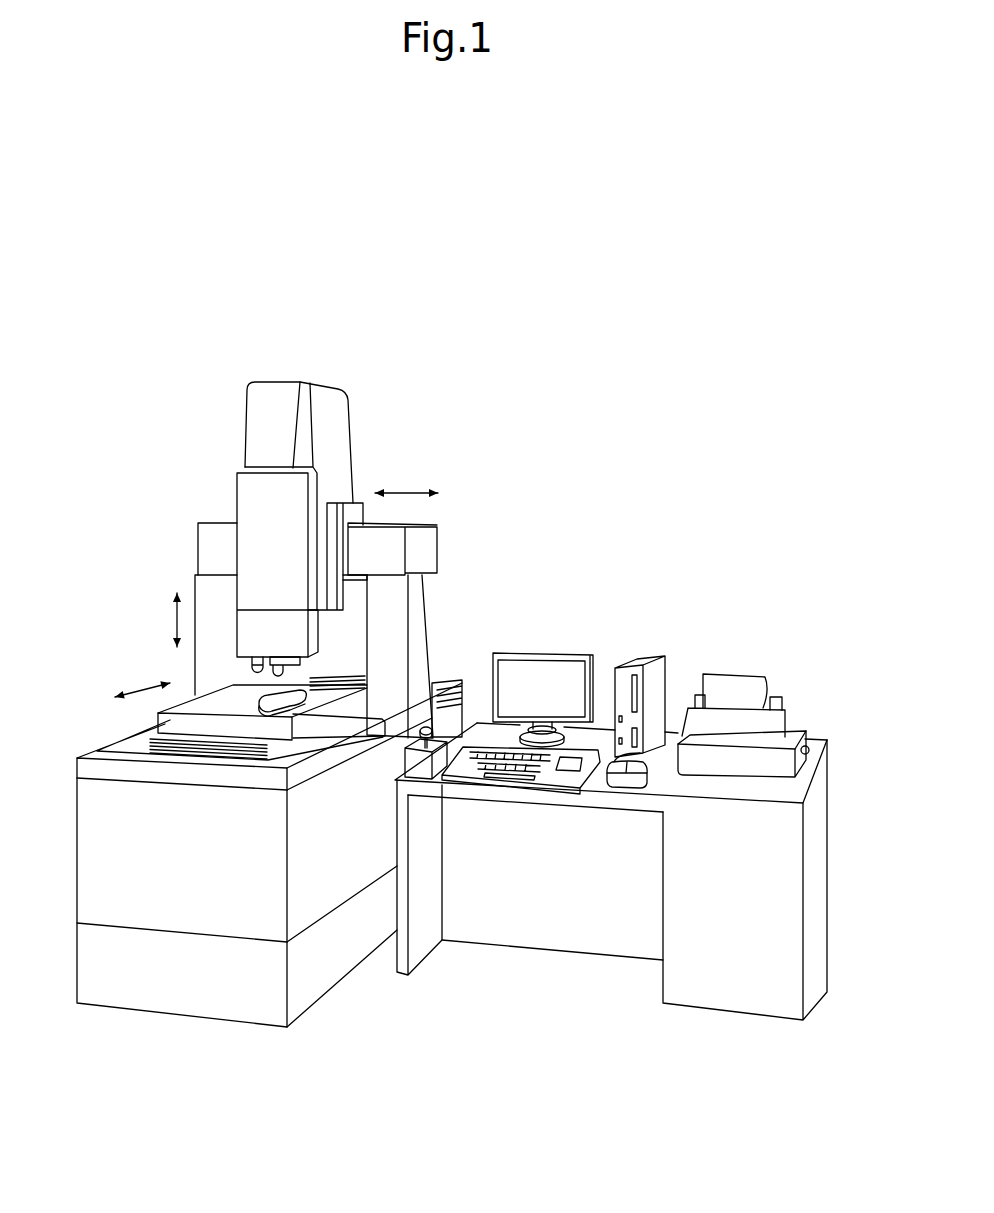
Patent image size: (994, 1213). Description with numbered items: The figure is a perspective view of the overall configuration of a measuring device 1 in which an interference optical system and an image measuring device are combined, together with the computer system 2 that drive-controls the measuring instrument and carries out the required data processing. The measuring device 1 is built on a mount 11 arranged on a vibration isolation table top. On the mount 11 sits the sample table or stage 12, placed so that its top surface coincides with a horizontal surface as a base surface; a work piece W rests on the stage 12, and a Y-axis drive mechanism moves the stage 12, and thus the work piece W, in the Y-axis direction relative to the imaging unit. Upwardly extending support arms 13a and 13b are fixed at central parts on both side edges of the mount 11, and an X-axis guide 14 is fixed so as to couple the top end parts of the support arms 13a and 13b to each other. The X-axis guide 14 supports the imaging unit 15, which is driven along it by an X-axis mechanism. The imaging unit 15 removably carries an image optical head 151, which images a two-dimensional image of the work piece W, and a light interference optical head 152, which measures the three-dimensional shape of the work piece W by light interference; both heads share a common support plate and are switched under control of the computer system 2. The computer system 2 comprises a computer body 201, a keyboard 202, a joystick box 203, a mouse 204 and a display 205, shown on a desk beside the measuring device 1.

The measuring device 1 is at (372, 403).
The mount 11 is at (138, 735).
The stage 12 is at (233, 694).
The support arm 13a is at (420, 626).
The support arm 13b is at (196, 594).
The X-axis guide 14 is at (208, 523).
The imaging unit 15 is at (248, 418).
The image optical head 151 is at (287, 672).
The light interference optical head 152 is at (260, 656).
The work piece W is at (290, 703).
The computer system 2 is at (604, 624).
The computer body 201 is at (655, 653).
The keyboard 202 is at (567, 776).
The joystick box 203 is at (424, 756).
The mouse 204 is at (620, 776).
The display 205 is at (527, 652).